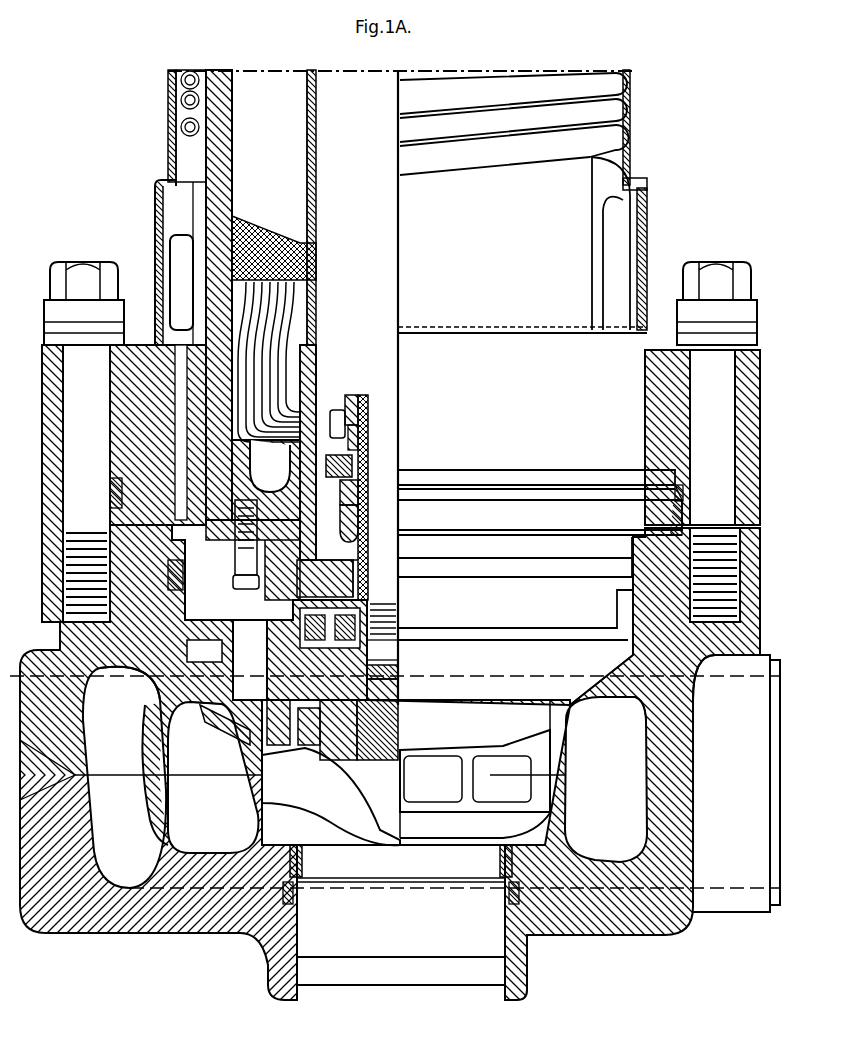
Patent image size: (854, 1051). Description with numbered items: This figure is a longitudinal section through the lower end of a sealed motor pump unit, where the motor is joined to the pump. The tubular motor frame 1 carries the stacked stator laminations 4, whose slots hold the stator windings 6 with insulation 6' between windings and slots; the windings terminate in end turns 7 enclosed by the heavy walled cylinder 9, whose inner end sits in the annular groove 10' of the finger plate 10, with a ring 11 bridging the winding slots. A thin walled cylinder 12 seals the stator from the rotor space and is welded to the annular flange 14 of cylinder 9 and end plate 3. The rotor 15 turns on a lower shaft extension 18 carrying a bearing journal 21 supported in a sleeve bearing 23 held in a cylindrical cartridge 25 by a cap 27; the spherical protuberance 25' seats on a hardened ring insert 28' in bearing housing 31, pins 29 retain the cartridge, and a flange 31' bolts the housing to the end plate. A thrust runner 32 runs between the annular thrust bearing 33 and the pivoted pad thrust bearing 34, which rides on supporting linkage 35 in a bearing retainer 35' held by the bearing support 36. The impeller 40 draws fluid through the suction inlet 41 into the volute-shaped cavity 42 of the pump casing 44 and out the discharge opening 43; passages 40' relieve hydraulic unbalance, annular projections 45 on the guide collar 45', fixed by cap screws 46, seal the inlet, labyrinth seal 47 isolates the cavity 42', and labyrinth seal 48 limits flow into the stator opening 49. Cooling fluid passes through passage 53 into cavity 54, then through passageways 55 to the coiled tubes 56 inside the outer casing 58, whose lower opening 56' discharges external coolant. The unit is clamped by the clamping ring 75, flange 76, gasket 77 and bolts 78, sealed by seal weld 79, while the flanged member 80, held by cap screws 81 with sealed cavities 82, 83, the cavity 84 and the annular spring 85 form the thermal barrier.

The motor frame 1 is at (222, 205).
The end plate 3 is at (162, 431).
The stator laminations 4 is at (312, 242).
The stator windings 6 is at (289, 349).
The insulation 6' is at (214, 263).
The end turns 7 is at (292, 395).
The cylinder 9 is at (318, 358).
The finger plate 10 is at (311, 352).
The annular groove 10' is at (321, 347).
The ring 11 is at (300, 297).
The thin walled cylinder 12 is at (316, 196).
The annular flange 14 is at (302, 486).
The rotor 15 is at (388, 233).
The shaft extension 18 is at (400, 549).
The bearing journal 21 is at (400, 447).
The sleeve bearing 23 is at (368, 432).
The cylindrical cartridge 25 is at (371, 410).
The spherical protuberance 25' is at (374, 439).
The cap 27 is at (352, 416).
The hardened ring insert 28' is at (371, 492).
The pins 29 is at (352, 470).
The bearing housing 31 is at (348, 541).
The flange 31' is at (232, 544).
The thrust runner 32 is at (358, 576).
The thrust bearing 33 is at (350, 557).
The thrust bearing 34 is at (360, 598).
The supporting linkage 35 is at (348, 634).
The bearing retainer 35' is at (398, 644).
The bearing support 36 is at (366, 684).
The impeller 40 is at (475, 769).
The passages 40' is at (331, 796).
The suction inlet 41 is at (447, 960).
The volute-shaped cavity 42 is at (418, 758).
The cavity 42' is at (338, 730).
The discharge opening 43 is at (772, 866).
The pump casing 44 is at (690, 697).
The annular projections 45 is at (397, 862).
The guide collar 45' is at (488, 895).
The cap screws 46 is at (300, 900).
The labyrinth seal 47 is at (317, 726).
The labyrinth seal 48 is at (366, 699).
The stator opening 49 is at (316, 134).
The passage 53 is at (358, 516).
The cavity 54 is at (204, 651).
The passageways 55 is at (180, 478).
The coiled tubes 56 is at (183, 273).
The lower opening 56' is at (148, 262).
The outer casing 58 is at (178, 128).
The clamping ring 75 is at (760, 363).
The flange 76 is at (670, 474).
The gasket 77 is at (156, 545).
The bolts 78 is at (80, 268).
The seal weld 79 is at (112, 493).
The flanged member 80 is at (176, 668).
The cap screws 81 is at (167, 585).
The sealed cavity 82 is at (215, 672).
The sealed cavity 83 is at (248, 674).
The sealed cavity 84 is at (268, 688).
The annular spring 85 is at (280, 640).